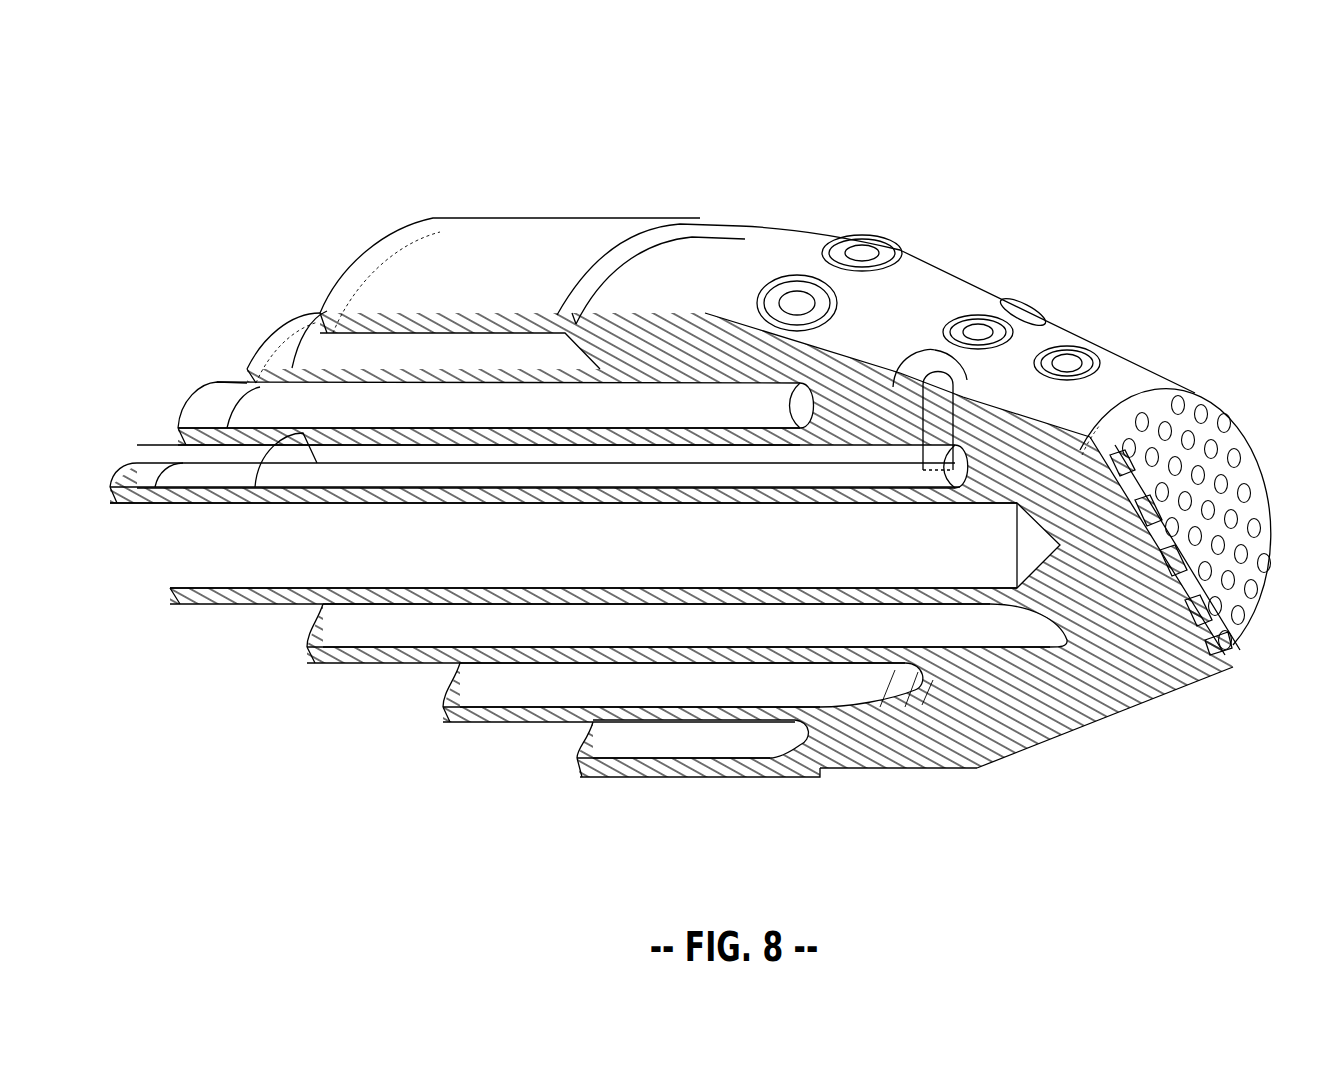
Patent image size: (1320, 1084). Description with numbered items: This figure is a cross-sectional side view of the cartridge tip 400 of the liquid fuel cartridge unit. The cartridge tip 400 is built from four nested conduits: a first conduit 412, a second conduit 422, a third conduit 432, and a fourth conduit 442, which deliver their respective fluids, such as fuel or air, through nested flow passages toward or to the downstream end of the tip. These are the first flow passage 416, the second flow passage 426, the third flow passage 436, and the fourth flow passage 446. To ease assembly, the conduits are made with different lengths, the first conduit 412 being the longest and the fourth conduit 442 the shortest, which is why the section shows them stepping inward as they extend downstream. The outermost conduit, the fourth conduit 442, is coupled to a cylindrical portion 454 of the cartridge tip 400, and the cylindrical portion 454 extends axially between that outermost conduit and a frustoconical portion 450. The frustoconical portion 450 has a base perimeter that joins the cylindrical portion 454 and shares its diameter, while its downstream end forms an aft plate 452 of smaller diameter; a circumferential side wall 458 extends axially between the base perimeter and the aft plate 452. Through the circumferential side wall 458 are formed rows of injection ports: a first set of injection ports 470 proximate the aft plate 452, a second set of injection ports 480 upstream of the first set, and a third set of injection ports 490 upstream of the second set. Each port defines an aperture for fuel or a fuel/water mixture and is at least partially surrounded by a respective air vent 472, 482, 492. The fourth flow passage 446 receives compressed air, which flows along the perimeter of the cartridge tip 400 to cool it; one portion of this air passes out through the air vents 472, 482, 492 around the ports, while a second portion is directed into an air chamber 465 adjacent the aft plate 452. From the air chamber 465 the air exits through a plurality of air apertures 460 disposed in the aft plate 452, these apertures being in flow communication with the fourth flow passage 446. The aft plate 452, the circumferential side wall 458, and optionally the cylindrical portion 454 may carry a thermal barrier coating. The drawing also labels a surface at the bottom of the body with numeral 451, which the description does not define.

The cartridge tip 400 is at (312, 158).
The fourth conduit 442 is at (383, 318).
The third conduit 432 is at (333, 377).
The cylindrical portion 454 is at (733, 230).
The third set of injection ports 490 is at (857, 257).
The air vent 492 is at (862, 250).
The second set of injection ports 480 is at (1027, 307).
The air vent 482 is at (950, 330).
The air vent 472 is at (1070, 350).
The first set of injection ports 470 is at (1068, 372).
The air chamber 465 is at (1085, 420).
The air apertures 460 is at (1228, 423).
The aft plate 452 is at (1247, 623).
The second conduit 422 is at (257, 455).
The first conduit 412 is at (290, 493).
The first flow passage 416 is at (480, 545).
The second flow passage 426 is at (520, 623).
The third flow passage 436 is at (573, 692).
The fourth flow passage 446 is at (632, 735).
The bottom surface 451 is at (973, 770).
The circumferential side wall 458 is at (1120, 713).
The frustoconical portion 450 is at (1108, 755).